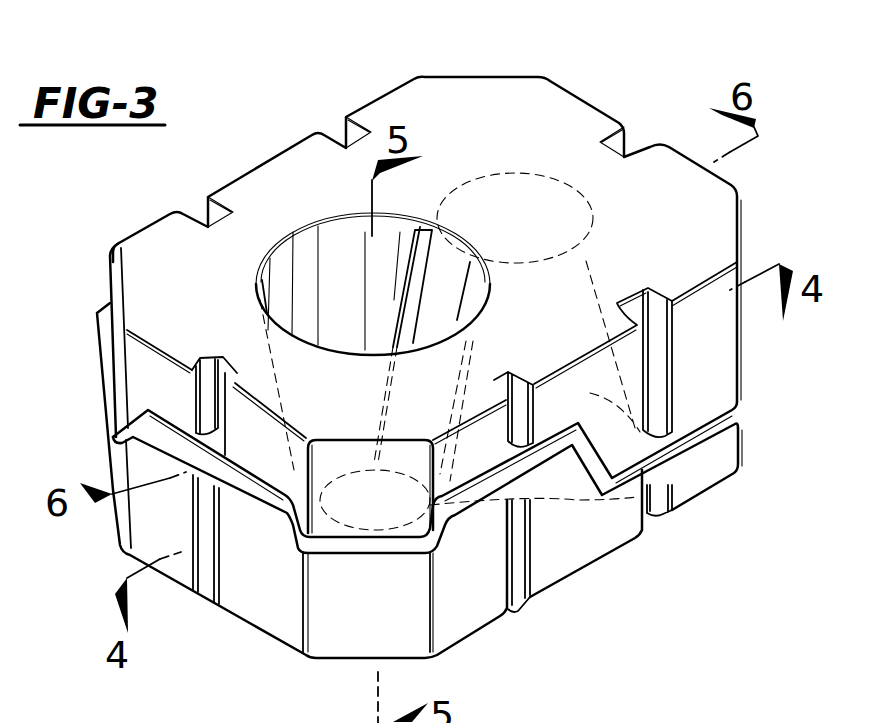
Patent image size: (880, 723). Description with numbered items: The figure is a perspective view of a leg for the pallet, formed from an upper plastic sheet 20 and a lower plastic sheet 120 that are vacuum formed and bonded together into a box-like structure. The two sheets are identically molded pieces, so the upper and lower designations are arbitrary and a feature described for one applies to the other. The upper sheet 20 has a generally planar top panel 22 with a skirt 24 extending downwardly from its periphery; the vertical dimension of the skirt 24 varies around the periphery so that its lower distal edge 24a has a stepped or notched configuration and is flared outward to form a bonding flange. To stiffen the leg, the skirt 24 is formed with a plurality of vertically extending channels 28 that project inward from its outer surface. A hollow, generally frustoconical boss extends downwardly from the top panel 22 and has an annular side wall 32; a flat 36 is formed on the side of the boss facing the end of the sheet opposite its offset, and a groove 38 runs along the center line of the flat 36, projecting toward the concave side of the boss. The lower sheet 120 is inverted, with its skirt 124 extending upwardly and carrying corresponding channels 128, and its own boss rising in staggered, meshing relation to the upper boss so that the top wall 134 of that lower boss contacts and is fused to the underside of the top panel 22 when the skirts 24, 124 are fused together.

The upper plastic sheet 20 is at (128, 228).
The top panel 22 is at (552, 100).
The skirt 24 is at (720, 338).
The distal edge 24a is at (720, 389).
The channel 28 is at (672, 405).
The annular side wall 32 is at (300, 275).
The flat 36 is at (407, 240).
The groove 38 is at (428, 290).
The lower plastic sheet 120 is at (603, 569).
The skirt 124 is at (726, 461).
The channel 128 is at (657, 508).
The top wall 134 is at (540, 200).